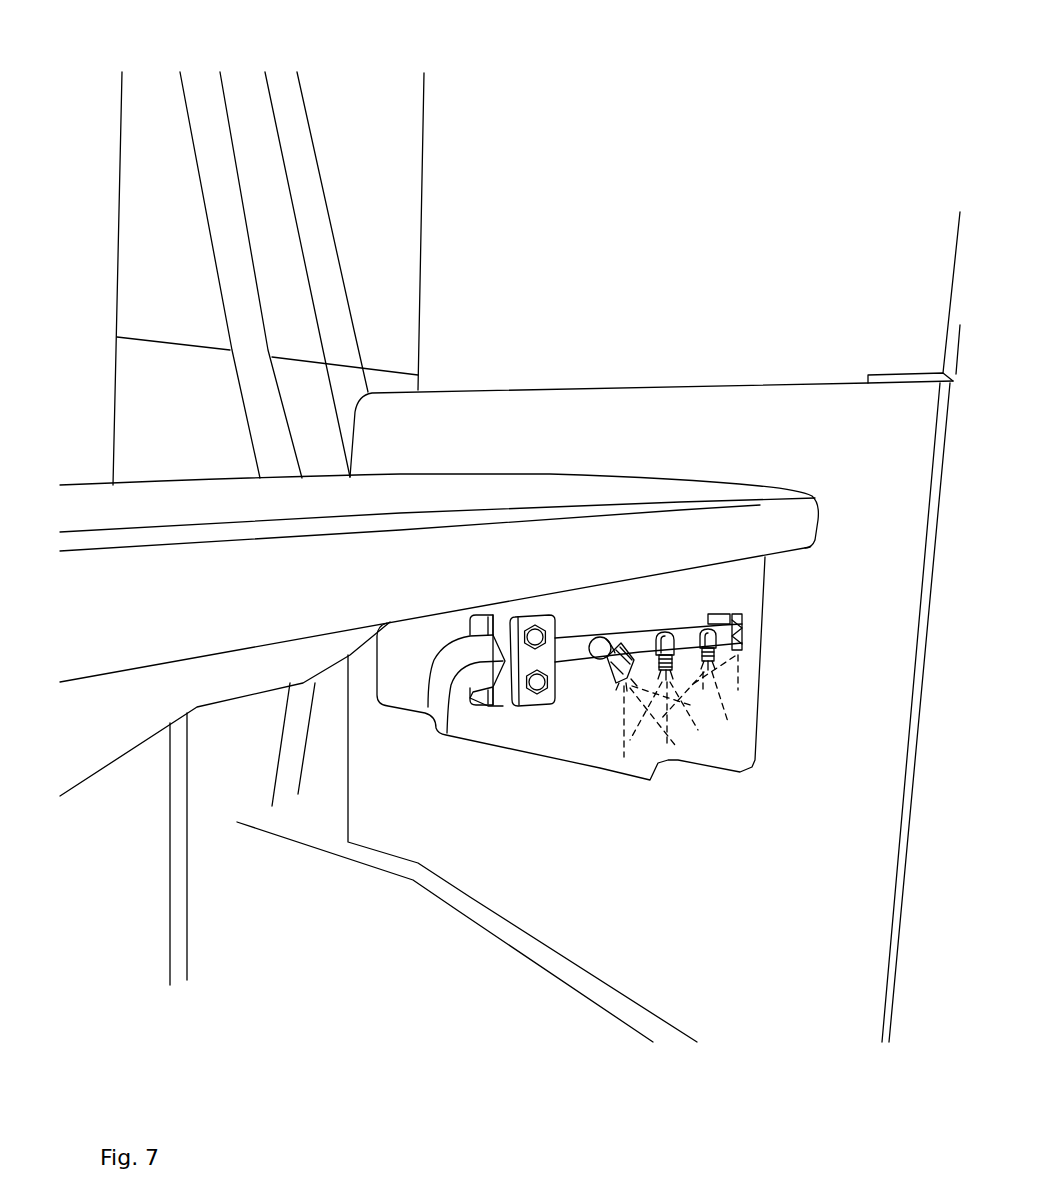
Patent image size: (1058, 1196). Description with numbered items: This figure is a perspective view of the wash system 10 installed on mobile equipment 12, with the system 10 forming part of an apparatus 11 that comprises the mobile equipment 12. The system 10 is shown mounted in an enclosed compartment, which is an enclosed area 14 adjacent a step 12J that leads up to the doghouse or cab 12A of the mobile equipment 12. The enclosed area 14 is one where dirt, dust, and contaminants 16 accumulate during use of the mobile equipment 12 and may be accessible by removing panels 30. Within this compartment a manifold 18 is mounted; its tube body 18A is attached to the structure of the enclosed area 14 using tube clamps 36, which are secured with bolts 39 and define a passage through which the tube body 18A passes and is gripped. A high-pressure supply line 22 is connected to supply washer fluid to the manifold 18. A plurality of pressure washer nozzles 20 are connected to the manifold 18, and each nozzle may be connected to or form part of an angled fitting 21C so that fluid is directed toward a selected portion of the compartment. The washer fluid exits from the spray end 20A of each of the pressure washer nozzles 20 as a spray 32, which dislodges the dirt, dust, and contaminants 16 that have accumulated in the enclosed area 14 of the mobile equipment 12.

The wash system 10 is at (73, 54).
The apparatus 11 is at (676, 605).
The mobile equipment 12 is at (466, 408).
The cab 12A is at (95, 295).
The step 12J is at (197, 503).
The enclosed area 14 is at (614, 748).
The contaminants 16 is at (746, 760).
The manifold 18 is at (690, 632).
The tube body 18A is at (633, 640).
The pressure washer nozzles 20 is at (615, 675).
The spray end 20A is at (722, 671).
The angled fitting 21C is at (613, 635).
The high-pressure supply line 22 is at (413, 700).
The panels 30 is at (572, 856).
The washer fluid spray 32 is at (753, 661).
The tube clamps 36 is at (736, 614).
The bolts 39 is at (528, 627).